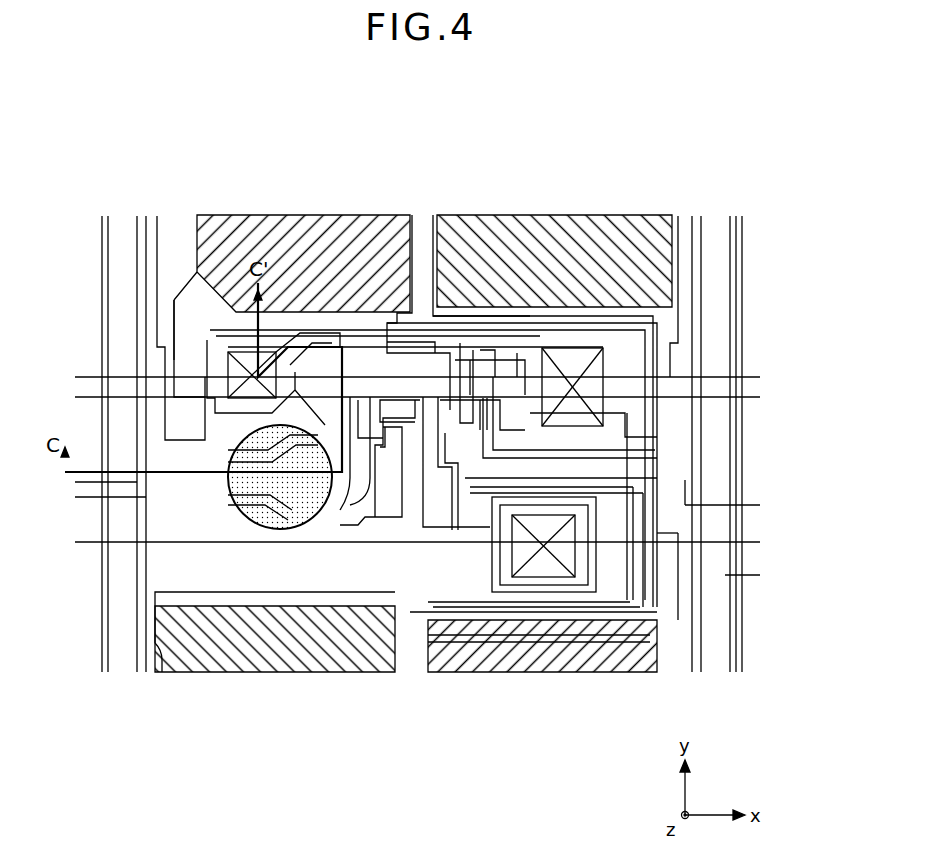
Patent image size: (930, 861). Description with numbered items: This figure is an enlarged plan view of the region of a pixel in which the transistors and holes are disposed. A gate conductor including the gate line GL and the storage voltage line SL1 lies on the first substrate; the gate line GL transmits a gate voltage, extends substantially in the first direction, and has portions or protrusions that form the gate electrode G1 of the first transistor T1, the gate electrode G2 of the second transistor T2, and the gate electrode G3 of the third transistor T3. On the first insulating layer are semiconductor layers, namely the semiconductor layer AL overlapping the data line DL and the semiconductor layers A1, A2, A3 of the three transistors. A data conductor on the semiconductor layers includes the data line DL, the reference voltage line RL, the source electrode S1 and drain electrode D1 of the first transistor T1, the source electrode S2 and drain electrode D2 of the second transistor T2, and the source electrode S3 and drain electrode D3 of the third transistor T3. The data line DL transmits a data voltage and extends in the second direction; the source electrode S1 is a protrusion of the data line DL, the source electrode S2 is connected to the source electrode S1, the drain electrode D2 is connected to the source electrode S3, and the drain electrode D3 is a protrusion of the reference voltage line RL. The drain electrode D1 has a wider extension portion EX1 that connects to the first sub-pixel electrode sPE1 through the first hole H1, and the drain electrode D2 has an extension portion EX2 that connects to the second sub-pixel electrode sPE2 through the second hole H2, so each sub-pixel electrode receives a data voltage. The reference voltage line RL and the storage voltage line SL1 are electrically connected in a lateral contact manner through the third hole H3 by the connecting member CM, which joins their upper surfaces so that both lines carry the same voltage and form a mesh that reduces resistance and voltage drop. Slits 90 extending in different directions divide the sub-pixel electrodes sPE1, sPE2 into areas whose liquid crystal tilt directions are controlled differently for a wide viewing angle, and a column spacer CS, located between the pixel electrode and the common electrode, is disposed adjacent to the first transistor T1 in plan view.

The semiconductor layer AL is at (145, 282).
The data line DL is at (140, 332).
The storage voltage line SL1 is at (766, 377).
The gate line GL is at (68, 515).
The connecting member CM is at (658, 357).
The first sub-pixel electrode sPE1 is at (207, 285).
The second sub-pixel electrode sPE2 is at (157, 645).
The reference voltage line RL is at (436, 208).
The extension portion EX1 is at (330, 340).
The extension portion EX2 is at (595, 523).
The slits 90 is at (282, 330).
The first hole H1 is at (250, 372).
The second hole H2 is at (557, 548).
The third hole H3 is at (573, 347).
The column spacer CS is at (278, 478).
The first transistor T1 is at (370, 736).
The second transistor T2 is at (508, 736).
The third transistor T3 is at (575, 163).
The gate electrode G1 is at (275, 505).
The source electrode S1 is at (322, 500).
The semiconductor layer A1 is at (340, 487).
The drain electrode D1 is at (362, 485).
The gate electrode G2 is at (453, 550).
The source electrode S2 is at (413, 487).
The semiconductor layer A2 is at (437, 527).
The drain electrode D2 is at (455, 545).
The gate electrode G3 is at (490, 395).
The source electrode S3 is at (410, 365).
The semiconductor layer A3 is at (430, 400).
The drain electrode D3 is at (500, 395).